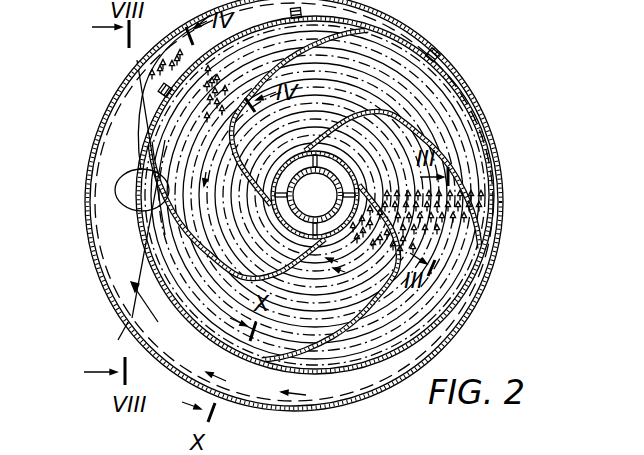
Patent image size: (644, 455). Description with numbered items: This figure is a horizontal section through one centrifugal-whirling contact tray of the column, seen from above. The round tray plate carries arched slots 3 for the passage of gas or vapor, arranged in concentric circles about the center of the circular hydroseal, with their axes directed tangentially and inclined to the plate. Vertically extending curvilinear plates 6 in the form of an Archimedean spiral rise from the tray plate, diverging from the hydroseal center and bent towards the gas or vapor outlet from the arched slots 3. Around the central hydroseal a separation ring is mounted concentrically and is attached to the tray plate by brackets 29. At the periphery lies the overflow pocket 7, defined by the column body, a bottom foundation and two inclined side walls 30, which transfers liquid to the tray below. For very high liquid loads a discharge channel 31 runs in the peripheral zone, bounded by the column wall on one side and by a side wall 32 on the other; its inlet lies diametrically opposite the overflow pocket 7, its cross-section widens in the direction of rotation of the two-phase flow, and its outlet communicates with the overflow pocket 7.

The arched slots 3 is at (486, 195).
The curvilinear plates 6 is at (382, 20).
The overflow pocket 7 is at (104, 118).
The brackets 29 is at (162, 93).
The inclined side walls 30 is at (148, 279).
The discharge channel 31 is at (156, 327).
The side wall 32 is at (217, 343).